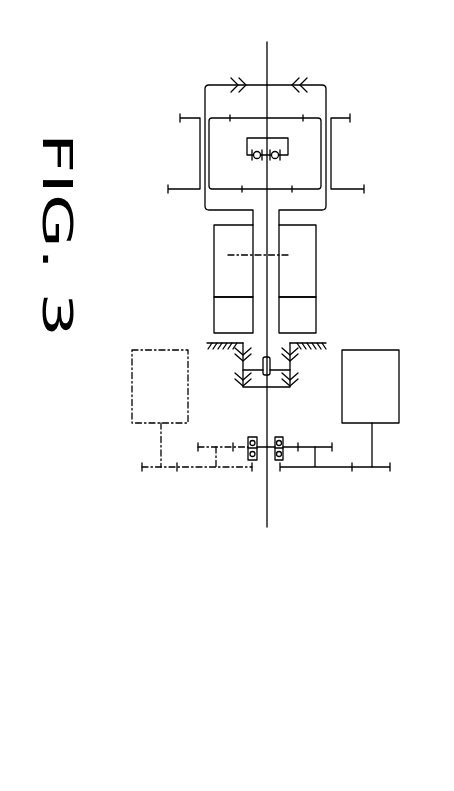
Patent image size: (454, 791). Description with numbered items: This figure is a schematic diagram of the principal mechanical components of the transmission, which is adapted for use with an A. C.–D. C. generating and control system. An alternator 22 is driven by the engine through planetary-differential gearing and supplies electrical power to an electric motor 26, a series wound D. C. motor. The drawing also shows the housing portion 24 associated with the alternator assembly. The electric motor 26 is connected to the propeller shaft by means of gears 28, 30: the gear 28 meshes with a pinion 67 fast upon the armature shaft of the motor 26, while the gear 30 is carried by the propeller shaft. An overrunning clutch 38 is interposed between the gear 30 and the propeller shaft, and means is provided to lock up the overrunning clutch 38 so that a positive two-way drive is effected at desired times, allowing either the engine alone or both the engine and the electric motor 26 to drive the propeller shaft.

The alternator 22 is at (323, 269).
The lower housing section 24 is at (320, 323).
The electric motor 26 is at (370, 408).
The gear 28 is at (337, 468).
The gear 30 is at (292, 446).
The overrunning clutch 38 is at (273, 463).
The pinion 67 is at (391, 470).